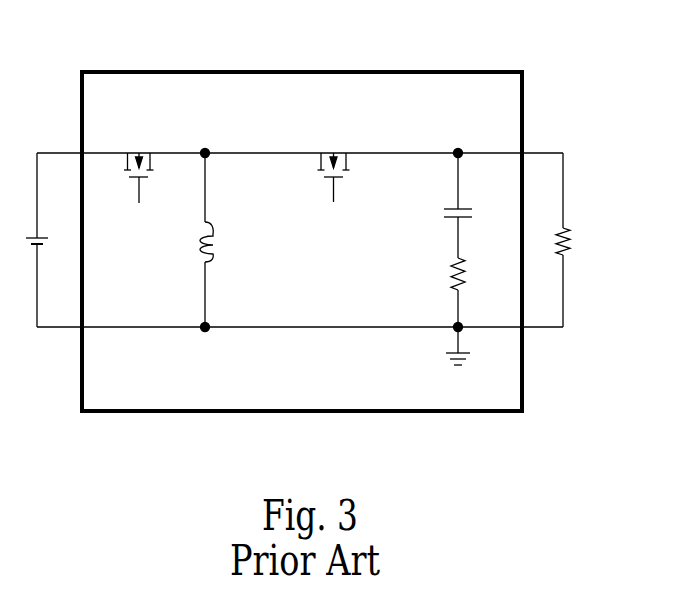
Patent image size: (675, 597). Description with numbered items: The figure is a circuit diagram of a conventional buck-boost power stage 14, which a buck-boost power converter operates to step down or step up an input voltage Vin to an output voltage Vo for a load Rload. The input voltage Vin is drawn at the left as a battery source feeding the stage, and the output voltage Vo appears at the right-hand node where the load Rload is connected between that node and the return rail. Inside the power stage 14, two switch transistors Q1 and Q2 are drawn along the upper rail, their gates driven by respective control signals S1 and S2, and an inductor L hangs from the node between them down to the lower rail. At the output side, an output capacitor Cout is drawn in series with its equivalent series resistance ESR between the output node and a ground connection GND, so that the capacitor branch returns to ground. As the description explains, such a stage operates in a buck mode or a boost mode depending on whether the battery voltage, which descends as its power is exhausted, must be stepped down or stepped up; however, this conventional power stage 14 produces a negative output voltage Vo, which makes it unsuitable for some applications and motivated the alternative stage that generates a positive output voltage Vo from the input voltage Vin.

The buck-boost power stage 14 is at (303, 71).
The input voltage Vin is at (37, 224).
The high-side switch transistor Q1 is at (138, 150).
The control signal for Q1 S1 is at (139, 210).
The output inductor L is at (220, 240).
The low-side switch transistor Q2 is at (334, 150).
The control signal for Q2 S2 is at (332, 211).
The output capacitor Cout is at (426, 204).
The equivalent series resistance of output capacitor ESR is at (427, 292).
The ground GND is at (458, 363).
The output voltage Vo is at (570, 175).
The load Rload is at (602, 275).